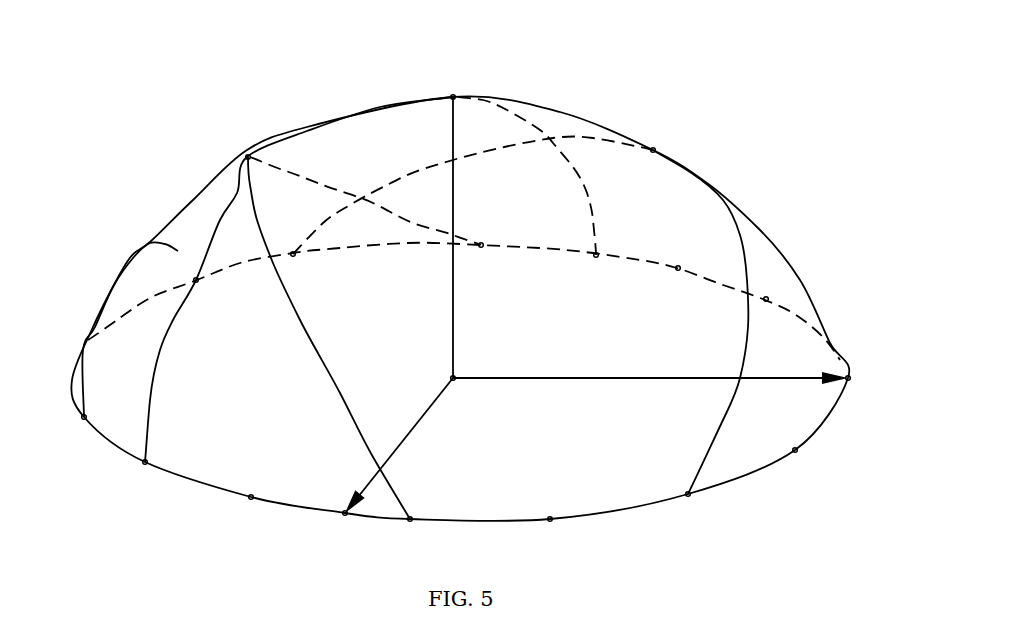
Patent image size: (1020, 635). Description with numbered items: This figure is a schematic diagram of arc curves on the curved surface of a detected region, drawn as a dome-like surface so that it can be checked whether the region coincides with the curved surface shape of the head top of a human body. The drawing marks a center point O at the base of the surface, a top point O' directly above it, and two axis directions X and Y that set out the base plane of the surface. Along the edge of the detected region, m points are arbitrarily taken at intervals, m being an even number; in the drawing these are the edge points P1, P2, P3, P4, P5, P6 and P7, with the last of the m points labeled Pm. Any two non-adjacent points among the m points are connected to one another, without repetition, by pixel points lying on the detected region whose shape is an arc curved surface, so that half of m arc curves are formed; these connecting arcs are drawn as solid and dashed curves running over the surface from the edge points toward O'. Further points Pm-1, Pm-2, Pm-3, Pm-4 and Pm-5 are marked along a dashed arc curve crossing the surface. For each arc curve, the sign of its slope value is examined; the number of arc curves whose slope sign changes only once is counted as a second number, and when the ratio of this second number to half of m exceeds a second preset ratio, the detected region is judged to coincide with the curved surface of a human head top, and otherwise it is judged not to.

The center of hemispherical dome base O is at (454, 396).
The zenith of hemispherical dome O' is at (451, 224).
The X axis X is at (390, 446).
The Y axis Y is at (661, 383).
The edge point P1 is at (68, 432).
The edge point P2 is at (140, 478).
The edge point P3 is at (244, 514).
The base circle sample point 4 P4 is at (409, 539).
The base circle sample point 5 P5 is at (554, 539).
The base circle sample point 6 P6 is at (696, 511).
The base circle sample point 7 P7 is at (807, 467).
The edge point Pm is at (204, 297).
The intermediate curve point Pm-1 is at (313, 271).
The intermediate curve point Pm-2 is at (484, 260).
The intermediate curve point Pm-3 is at (591, 271).
The intermediate curve point Pm-4 is at (681, 285).
The intermediate curve point Pm-5 is at (774, 323).